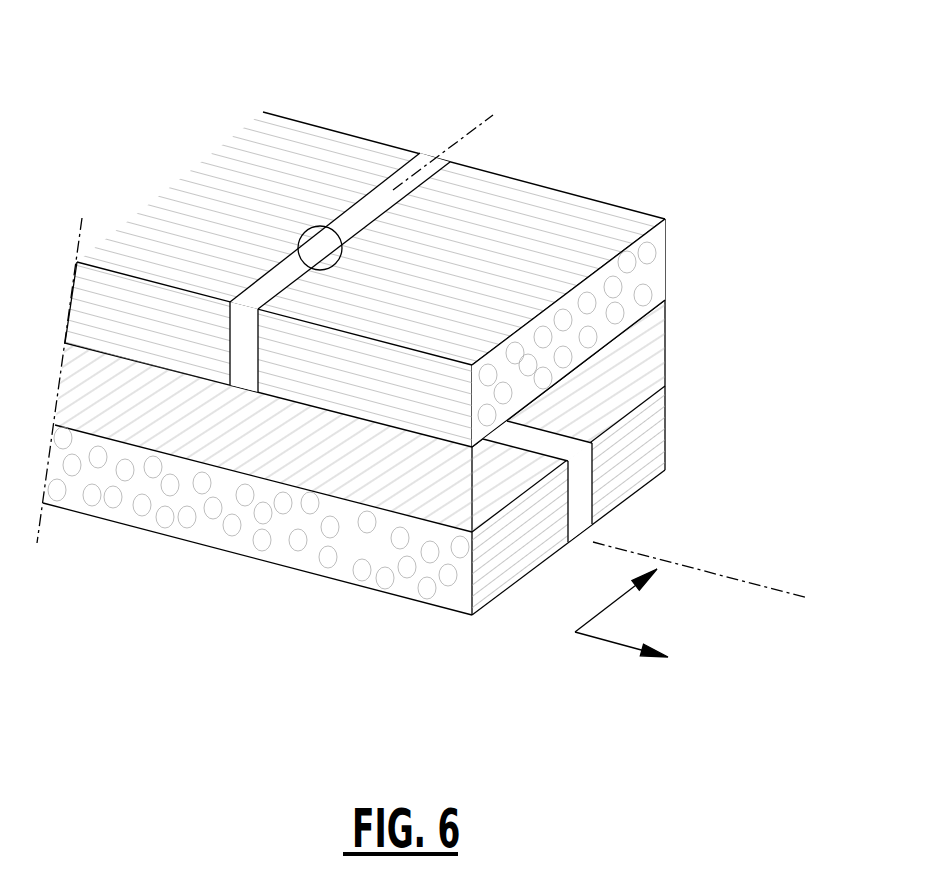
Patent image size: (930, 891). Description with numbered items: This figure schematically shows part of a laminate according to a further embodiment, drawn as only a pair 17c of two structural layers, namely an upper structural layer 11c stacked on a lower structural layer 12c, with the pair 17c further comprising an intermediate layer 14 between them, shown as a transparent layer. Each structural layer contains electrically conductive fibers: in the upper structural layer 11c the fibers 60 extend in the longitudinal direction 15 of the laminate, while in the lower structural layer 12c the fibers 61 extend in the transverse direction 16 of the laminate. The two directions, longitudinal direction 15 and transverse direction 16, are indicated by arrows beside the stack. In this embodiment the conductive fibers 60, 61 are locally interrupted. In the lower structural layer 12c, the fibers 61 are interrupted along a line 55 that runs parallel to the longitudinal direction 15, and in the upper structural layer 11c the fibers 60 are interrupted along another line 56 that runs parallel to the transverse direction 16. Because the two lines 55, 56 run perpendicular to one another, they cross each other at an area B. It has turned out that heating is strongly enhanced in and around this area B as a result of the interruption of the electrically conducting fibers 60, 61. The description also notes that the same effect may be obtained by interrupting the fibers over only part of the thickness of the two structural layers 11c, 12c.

The pair of structural layers 17c is at (150, 131).
The upper structural layer 11c is at (105, 307).
The lower structural layer 12c is at (123, 503).
The intermediate layer 14 is at (652, 327).
The line 55 is at (693, 528).
The line 56 is at (448, 138).
The electrically conductive fibers 60 is at (572, 235).
The electrically conductive fibers 61 is at (398, 543).
The transverse direction 16 is at (607, 607).
The longitudinal direction 15 is at (607, 642).
The area B is at (308, 227).